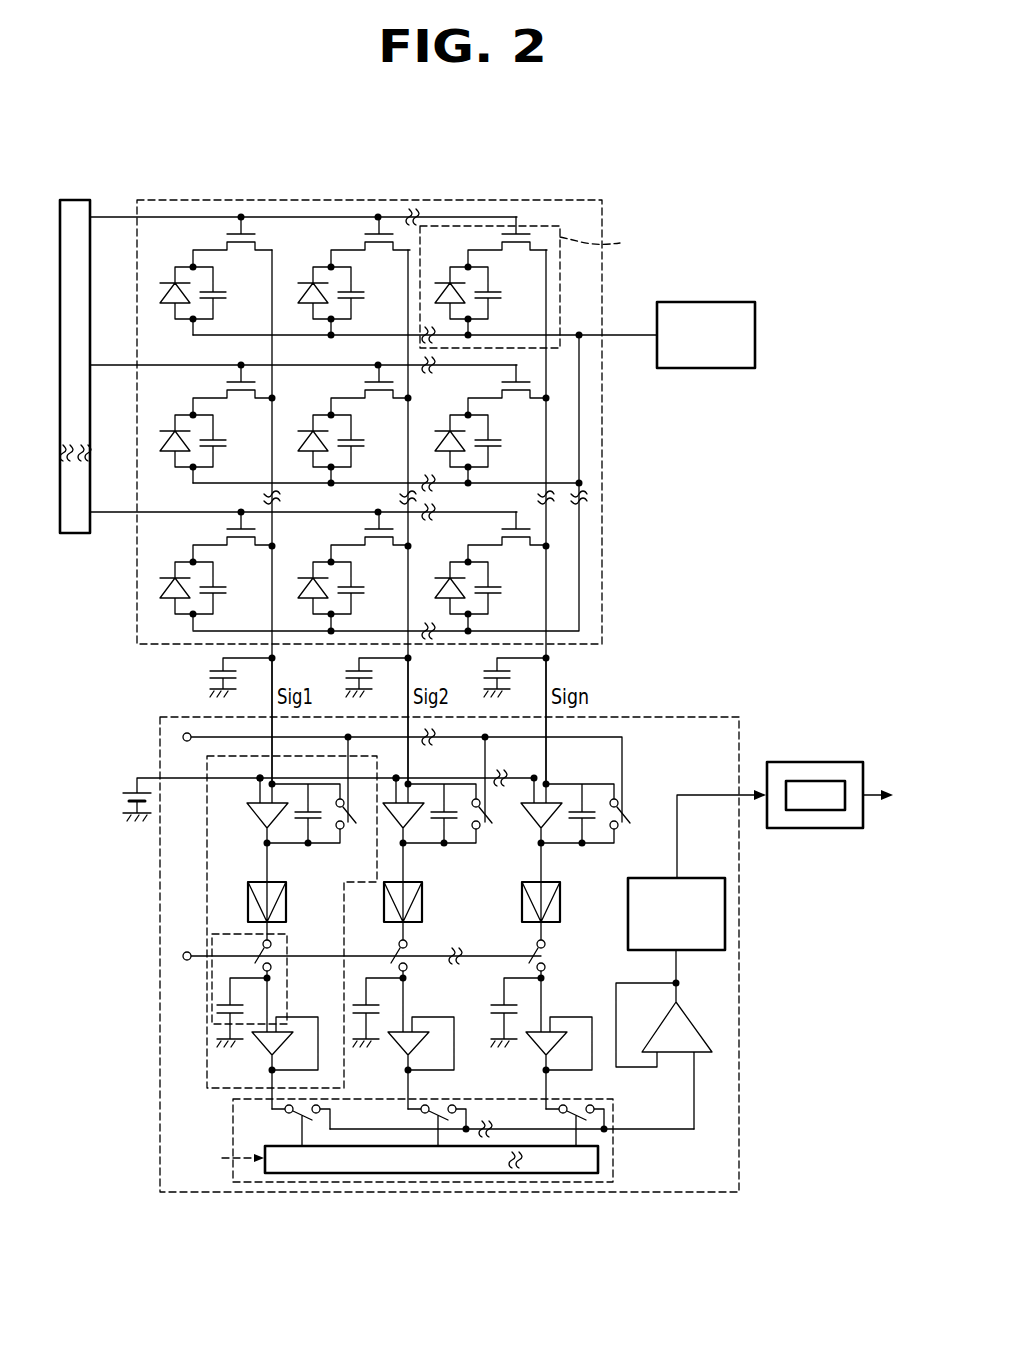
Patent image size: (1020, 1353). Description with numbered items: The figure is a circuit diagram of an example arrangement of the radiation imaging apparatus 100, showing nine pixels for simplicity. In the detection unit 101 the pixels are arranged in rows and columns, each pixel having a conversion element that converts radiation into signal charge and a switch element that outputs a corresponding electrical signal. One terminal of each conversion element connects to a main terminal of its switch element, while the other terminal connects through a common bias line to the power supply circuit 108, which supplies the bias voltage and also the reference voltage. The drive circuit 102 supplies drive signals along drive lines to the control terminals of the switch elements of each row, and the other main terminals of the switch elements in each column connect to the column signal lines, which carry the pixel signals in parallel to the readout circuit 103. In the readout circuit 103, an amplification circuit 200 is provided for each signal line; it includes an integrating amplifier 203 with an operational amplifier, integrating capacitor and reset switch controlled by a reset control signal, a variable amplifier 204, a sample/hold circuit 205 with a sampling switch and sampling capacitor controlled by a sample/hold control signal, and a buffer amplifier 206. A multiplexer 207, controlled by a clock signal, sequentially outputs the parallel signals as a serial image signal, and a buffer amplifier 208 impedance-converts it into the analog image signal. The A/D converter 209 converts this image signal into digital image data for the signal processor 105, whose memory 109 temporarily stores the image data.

The radiation imaging apparatus 100 is at (158, 135).
The detection unit 101 is at (220, 199).
The drive circuit 102 is at (74, 199).
The readout circuit 103 is at (158, 1112).
The signal processor 105 is at (813, 828).
The power supply circuit 108 is at (726, 302).
The memory 109 is at (822, 781).
The amplification circuit 200 is at (207, 922).
The integrating amplifier 203 is at (586, 782).
The variable amplifier 204 is at (248, 884).
The sample/hold circuit 205 is at (287, 942).
The buffer amplifier 206 is at (265, 1052).
The multiplexer 207 is at (232, 1133).
The buffer amplifier 208 is at (703, 1026).
The A/D converter 209 is at (725, 918).